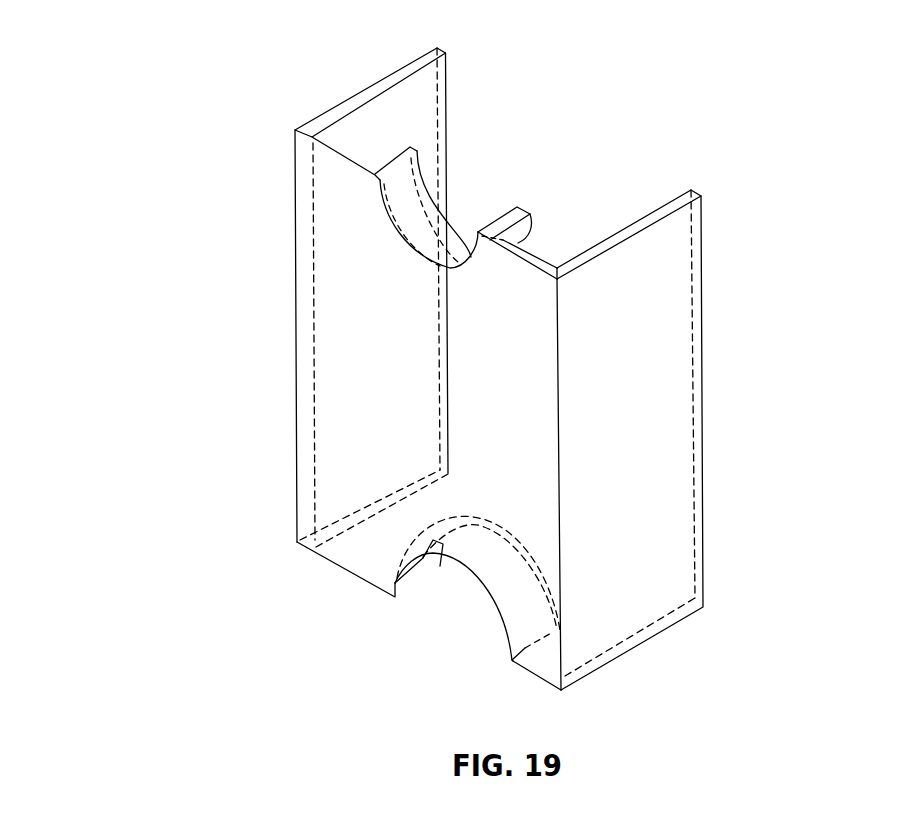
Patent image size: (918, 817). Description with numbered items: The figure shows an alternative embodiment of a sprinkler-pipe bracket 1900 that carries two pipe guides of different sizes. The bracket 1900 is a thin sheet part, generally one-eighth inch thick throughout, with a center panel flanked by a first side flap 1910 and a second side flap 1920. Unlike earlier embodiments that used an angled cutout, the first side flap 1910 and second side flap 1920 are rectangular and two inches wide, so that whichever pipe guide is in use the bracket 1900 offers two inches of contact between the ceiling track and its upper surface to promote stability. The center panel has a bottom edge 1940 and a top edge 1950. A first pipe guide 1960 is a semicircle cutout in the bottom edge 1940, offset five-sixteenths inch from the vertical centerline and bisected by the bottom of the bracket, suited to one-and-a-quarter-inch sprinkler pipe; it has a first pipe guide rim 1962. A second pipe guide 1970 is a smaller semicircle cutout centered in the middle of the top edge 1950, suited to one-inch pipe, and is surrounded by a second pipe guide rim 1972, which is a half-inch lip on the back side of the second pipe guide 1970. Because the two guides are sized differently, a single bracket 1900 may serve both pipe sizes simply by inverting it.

The bracket 1900 is at (157, 41).
The first side flap 1910 is at (364, 123).
The second side flap 1920 is at (657, 316).
The bottom edge 1940 is at (321, 556).
The top edge 1950 is at (546, 262).
The first pipe guide 1960 is at (458, 607).
The first pipe guide rim 1962 is at (533, 613).
The second pipe guide 1970 is at (473, 111).
The second pipe guide rim 1972 is at (534, 216).